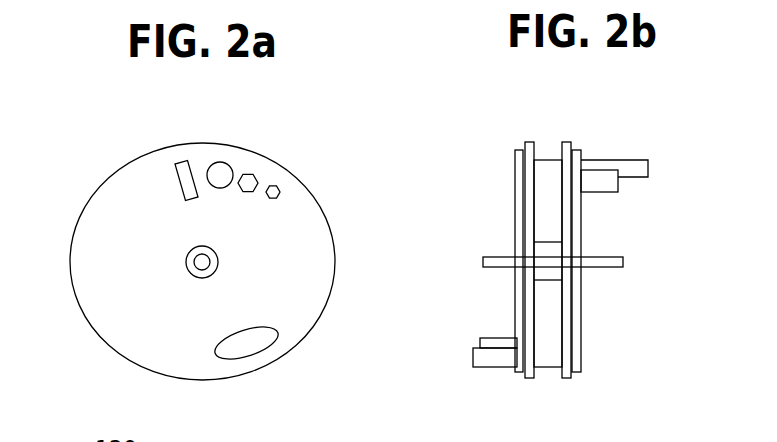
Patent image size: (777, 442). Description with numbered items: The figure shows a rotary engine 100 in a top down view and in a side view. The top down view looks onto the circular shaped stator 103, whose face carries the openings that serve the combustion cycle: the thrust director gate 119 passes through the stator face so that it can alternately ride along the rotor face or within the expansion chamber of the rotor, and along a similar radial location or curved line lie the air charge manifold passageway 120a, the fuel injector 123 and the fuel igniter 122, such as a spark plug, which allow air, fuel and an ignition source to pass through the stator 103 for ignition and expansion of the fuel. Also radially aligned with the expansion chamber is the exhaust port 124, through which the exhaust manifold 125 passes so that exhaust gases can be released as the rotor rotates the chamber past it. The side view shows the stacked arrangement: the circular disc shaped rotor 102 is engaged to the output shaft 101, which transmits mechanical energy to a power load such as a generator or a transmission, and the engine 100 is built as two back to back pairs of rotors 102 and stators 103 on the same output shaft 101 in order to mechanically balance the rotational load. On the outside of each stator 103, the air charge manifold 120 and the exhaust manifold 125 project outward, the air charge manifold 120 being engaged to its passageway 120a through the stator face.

In FIG. 2b, the rotary engine 100 is at (581, 323).
In FIG. 2b, the output shaft 101 is at (623, 265).
In FIG. 2b, the rotor 102 is at (537, 137).
In FIG. 2a, the stator 103 is at (341, 268).
In FIG. 2b, the stator 103 is at (583, 227).
In FIG. 2a, the thrust director gate 119 is at (167, 177).
In FIG. 2b, the air charge manifold 120 is at (652, 157).
In FIG. 2a, the air charge manifold passageway 120a is at (223, 163).
In FIG. 2a, the fuel igniter 122 is at (278, 187).
In FIG. 2a, the fuel injector 123 is at (257, 173).
In FIG. 2a, the exhaust port 124 is at (252, 360).
In FIG. 2b, the exhaust manifold 125 is at (607, 183).